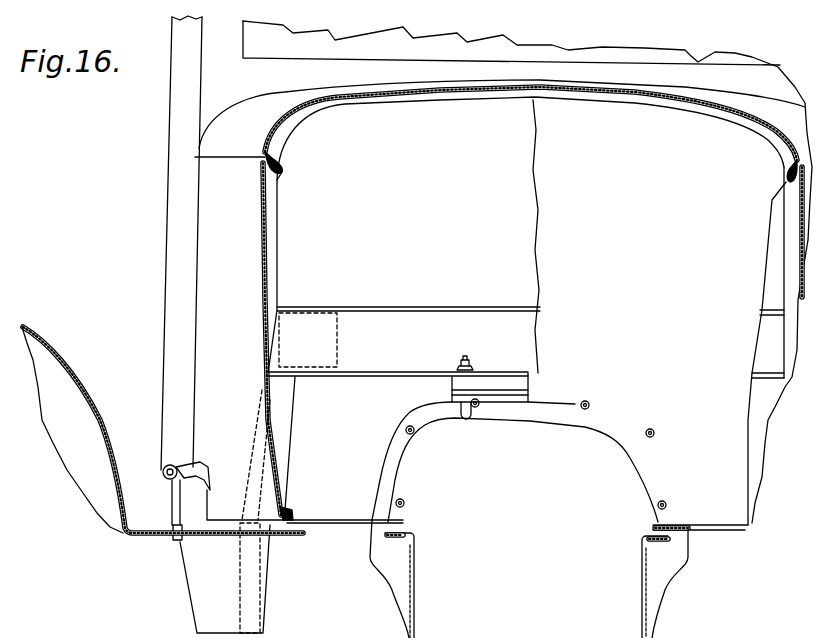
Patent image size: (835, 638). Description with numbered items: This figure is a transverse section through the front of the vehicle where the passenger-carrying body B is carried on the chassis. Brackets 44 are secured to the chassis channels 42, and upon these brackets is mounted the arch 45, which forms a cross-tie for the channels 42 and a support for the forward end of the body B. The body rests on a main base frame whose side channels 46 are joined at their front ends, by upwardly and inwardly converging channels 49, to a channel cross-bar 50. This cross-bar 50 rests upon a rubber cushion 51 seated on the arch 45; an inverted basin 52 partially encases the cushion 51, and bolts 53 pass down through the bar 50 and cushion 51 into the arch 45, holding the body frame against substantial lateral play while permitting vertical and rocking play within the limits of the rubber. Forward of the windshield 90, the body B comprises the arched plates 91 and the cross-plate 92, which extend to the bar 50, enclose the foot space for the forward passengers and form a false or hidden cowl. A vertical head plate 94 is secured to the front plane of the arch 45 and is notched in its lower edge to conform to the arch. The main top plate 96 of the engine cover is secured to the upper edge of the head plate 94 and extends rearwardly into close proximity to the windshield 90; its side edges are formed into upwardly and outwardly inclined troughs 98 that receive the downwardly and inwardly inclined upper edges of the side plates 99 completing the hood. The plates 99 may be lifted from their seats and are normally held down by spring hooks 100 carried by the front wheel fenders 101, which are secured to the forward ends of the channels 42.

The passenger-carrying body B is at (207, 102).
The windshield 90 is at (568, 55).
The main top plate 96 is at (443, 88).
The troughs 98 is at (280, 167).
The side plates 99 is at (802, 212).
The arched plates 91 is at (272, 243).
The cross-plate 92 is at (403, 236).
The head plate 94 is at (656, 285).
The channel cross-bar 50 is at (443, 313).
The bolts 53 is at (478, 338).
The inverted basin 52 is at (495, 380).
The rubber cushion 51 is at (508, 393).
The converging channels 49 is at (290, 400).
The arch 45 is at (397, 457).
The brackets 44 is at (387, 547).
The channels 42 is at (418, 568).
The side channels 46 is at (240, 603).
The spring hooks 100 is at (160, 470).
The front wheel fenders 101 is at (85, 372).